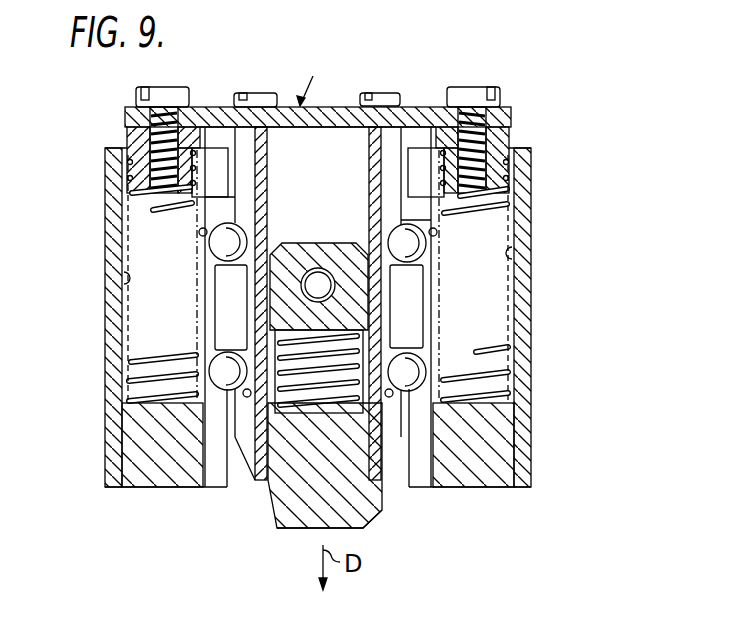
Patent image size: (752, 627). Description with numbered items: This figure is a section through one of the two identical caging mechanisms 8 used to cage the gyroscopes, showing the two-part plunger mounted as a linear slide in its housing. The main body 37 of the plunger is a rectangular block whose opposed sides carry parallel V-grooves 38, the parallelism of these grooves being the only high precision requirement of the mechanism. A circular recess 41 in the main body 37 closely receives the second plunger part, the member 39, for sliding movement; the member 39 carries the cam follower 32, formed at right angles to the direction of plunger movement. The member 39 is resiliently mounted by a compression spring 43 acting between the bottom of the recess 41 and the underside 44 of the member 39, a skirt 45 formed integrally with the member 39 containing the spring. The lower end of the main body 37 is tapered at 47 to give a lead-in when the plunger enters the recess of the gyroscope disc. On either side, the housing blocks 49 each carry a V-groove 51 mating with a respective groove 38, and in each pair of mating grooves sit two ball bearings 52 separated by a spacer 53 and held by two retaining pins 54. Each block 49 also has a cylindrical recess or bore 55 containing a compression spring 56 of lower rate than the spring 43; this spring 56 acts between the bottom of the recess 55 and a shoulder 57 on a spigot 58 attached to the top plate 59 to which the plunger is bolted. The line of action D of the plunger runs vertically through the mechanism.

The caging mechanism 8 is at (309, 77).
The cam follower 32 is at (319, 268).
The main body 37 is at (337, 448).
The V-grooves 38 is at (222, 452).
The member 39 is at (285, 253).
The circular recess 41 is at (318, 303).
The compression spring 43 is at (246, 450).
The underside 44 is at (300, 336).
The skirt 45 is at (368, 332).
The tapered end 47 is at (272, 520).
The blocks 49 is at (120, 422).
The V-groove 51 is at (212, 210).
The ball bearings 52 is at (225, 246).
The spacer 53 is at (228, 298).
The retaining pins 54 is at (199, 233).
The cylindrical recess 55 is at (124, 278).
The compression spring 56 is at (128, 213).
The shoulder 57 is at (127, 162).
The spigot 58 is at (128, 140).
The top plate 59 is at (204, 106).